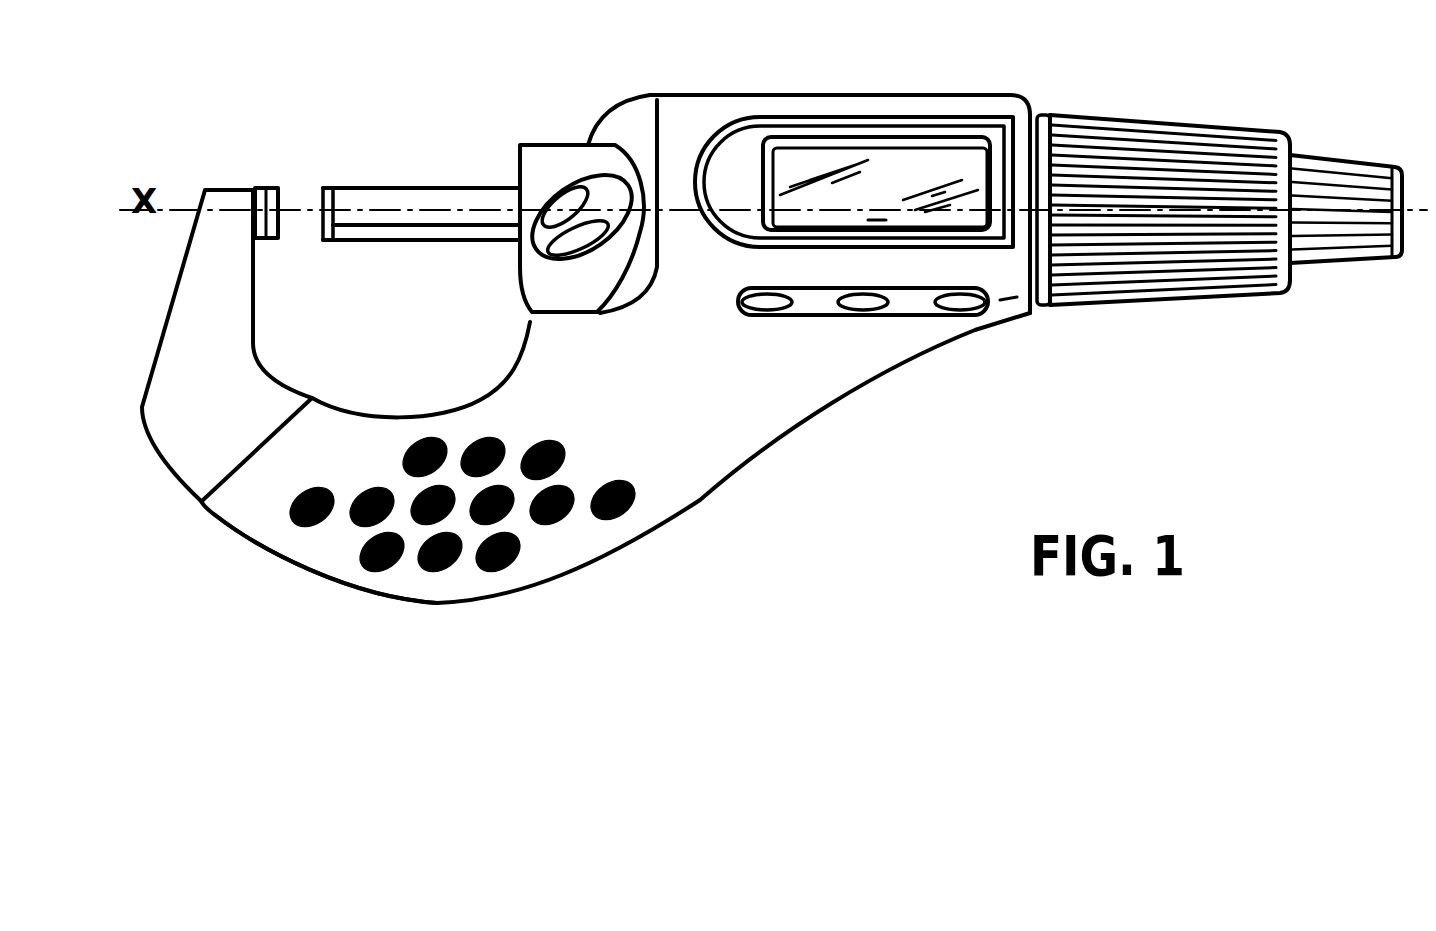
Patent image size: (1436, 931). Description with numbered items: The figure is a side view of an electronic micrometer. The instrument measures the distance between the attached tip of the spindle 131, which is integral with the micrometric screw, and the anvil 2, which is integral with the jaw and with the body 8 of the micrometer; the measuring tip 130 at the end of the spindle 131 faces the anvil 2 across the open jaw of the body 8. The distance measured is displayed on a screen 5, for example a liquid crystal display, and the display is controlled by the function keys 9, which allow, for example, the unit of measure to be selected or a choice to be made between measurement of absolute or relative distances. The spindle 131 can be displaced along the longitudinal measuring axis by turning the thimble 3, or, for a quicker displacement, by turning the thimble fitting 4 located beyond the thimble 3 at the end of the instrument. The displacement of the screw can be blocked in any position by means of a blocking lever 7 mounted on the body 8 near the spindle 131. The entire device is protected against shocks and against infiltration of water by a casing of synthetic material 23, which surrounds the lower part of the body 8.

The anvil 2 is at (273, 188).
The spindle measuring tip 130 is at (330, 190).
The spindle 131 is at (395, 197).
The body 8 is at (531, 157).
The blocking lever 7 is at (573, 213).
The screen 5 is at (854, 182).
The function keys 9 is at (787, 315).
The thimble 3 is at (1153, 123).
The thimble fitting 4 is at (1337, 157).
The casing of synthetic material 23 is at (277, 563).